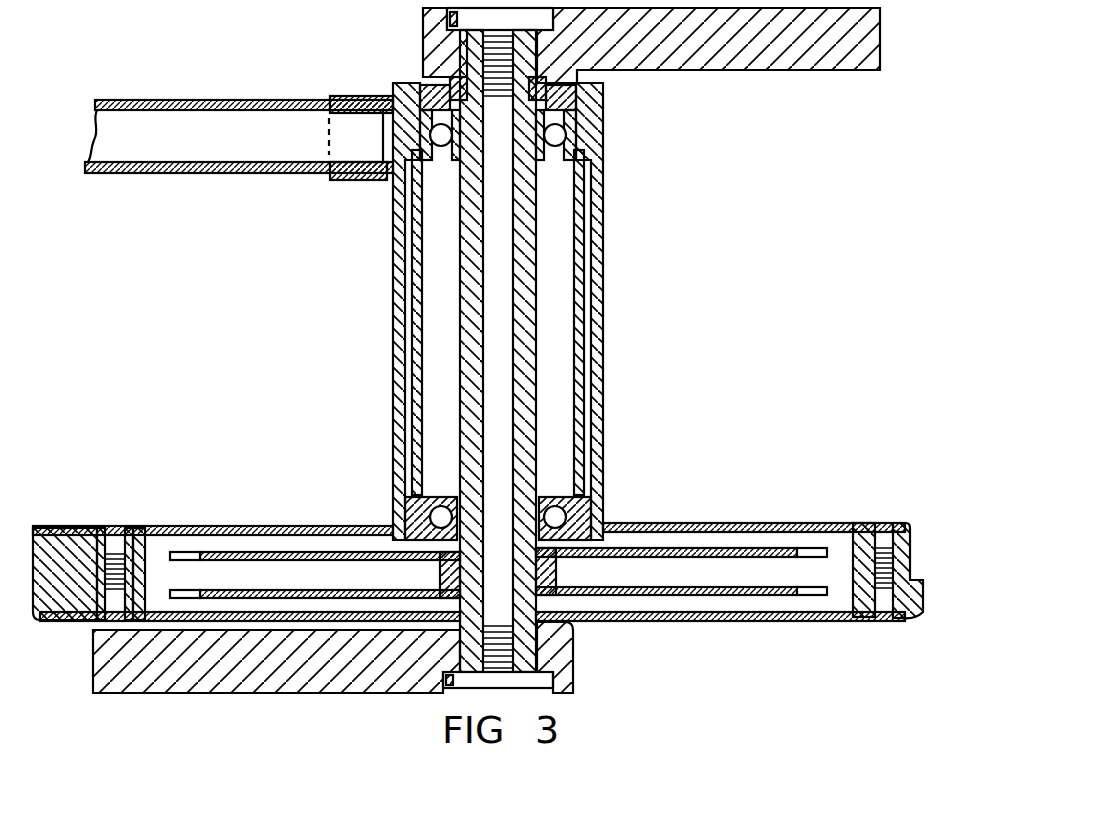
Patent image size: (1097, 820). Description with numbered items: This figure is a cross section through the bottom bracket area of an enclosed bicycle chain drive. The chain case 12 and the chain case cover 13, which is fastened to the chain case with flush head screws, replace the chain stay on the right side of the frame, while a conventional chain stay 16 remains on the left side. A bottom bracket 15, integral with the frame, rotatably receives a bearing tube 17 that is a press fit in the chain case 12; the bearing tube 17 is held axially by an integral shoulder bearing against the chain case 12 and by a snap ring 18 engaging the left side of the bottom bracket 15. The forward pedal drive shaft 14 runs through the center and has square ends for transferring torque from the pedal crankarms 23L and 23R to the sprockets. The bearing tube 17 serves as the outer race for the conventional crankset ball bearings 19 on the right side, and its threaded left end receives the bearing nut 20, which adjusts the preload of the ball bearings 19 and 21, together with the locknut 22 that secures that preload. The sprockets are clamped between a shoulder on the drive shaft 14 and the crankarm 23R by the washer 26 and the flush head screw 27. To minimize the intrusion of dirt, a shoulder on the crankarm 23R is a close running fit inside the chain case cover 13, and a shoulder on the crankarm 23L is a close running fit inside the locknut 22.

The chain case 12 is at (697, 523).
The chain case cover 13 is at (793, 620).
The forward pedal drive shaft 14 is at (536, 355).
The bottom bracket 15 is at (603, 310).
The chain stay 16 is at (200, 173).
The bearing tube 17 is at (422, 267).
The snap ring 18 is at (607, 88).
The crankset ball bearings 19 is at (548, 500).
The bearing nut 20 is at (572, 160).
The crankset ball bearings 21 is at (436, 150).
The locknut 22 is at (427, 82).
The pedal crankarm 23L is at (753, 70).
The pedal crankarm 23R is at (197, 693).
The washer 26 is at (555, 690).
The flush head screw 27 is at (473, 692).